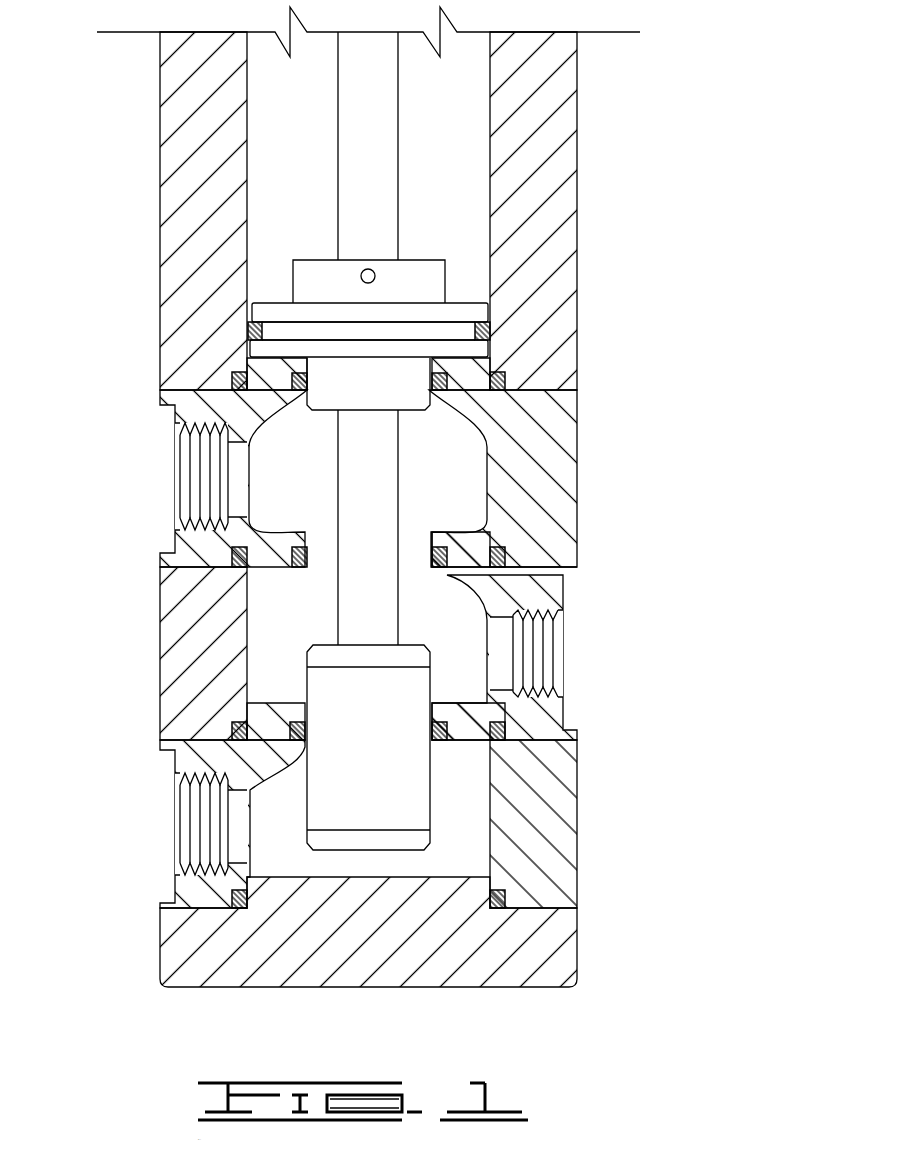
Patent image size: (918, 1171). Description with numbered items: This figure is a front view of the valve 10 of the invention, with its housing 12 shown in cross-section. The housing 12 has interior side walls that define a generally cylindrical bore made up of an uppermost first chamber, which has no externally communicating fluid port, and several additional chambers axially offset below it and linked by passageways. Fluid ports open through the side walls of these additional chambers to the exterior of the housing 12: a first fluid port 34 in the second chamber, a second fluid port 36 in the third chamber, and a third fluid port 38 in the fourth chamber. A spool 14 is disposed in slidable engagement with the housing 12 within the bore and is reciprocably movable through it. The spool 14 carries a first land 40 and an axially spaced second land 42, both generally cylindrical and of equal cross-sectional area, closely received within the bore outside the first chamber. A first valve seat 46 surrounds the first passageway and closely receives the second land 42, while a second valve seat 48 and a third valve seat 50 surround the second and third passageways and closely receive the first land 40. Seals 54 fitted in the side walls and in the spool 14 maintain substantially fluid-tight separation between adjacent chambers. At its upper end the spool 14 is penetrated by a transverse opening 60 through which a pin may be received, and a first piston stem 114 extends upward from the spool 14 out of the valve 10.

The valve 10 is at (655, 192).
The housing 12 is at (567, 498).
The spool 14 is at (305, 641).
The first fluid port 34 is at (235, 492).
The second fluid port 36 is at (500, 661).
The third fluid port 38 is at (235, 833).
The first land 40 is at (386, 793).
The second land 42 is at (352, 396).
The first valve seat 46 is at (440, 398).
The second valve seat 48 is at (437, 537).
The third valve seat 50 is at (433, 712).
The seals 54 is at (490, 326).
The transverse opening 60 is at (366, 270).
The first piston stem 114 is at (386, 98).